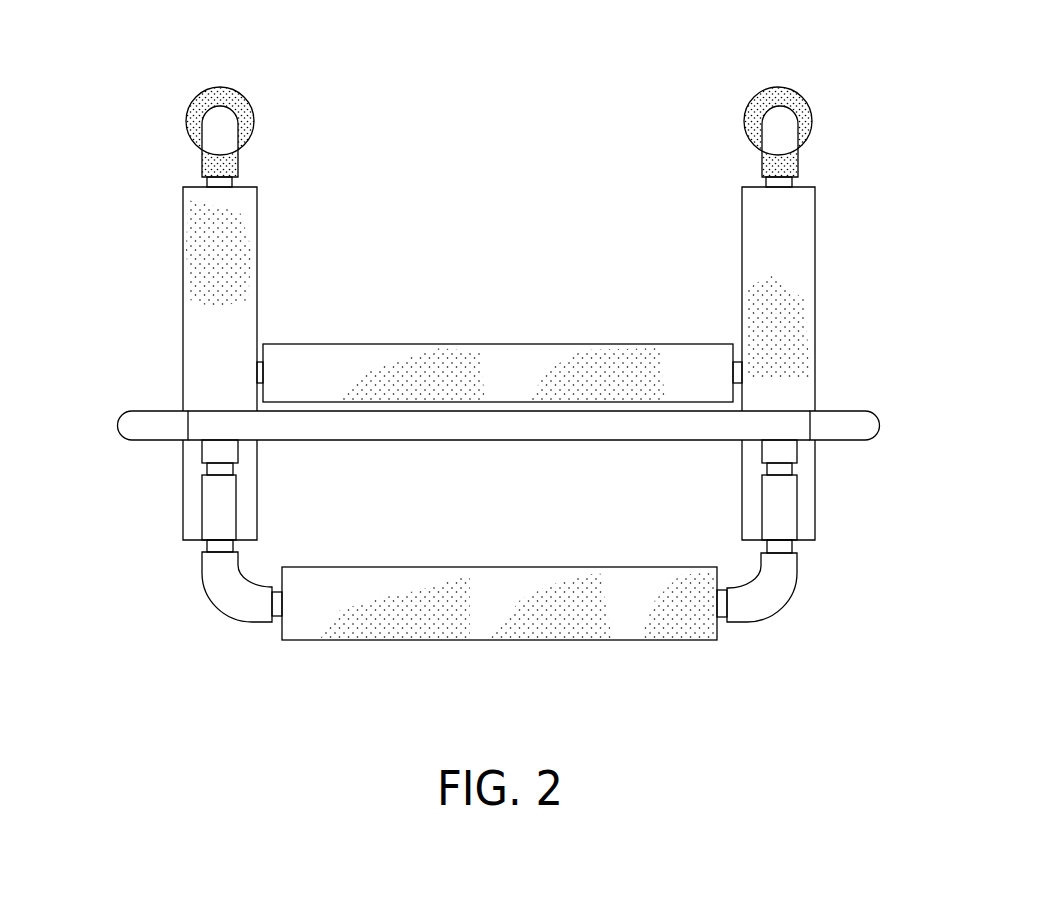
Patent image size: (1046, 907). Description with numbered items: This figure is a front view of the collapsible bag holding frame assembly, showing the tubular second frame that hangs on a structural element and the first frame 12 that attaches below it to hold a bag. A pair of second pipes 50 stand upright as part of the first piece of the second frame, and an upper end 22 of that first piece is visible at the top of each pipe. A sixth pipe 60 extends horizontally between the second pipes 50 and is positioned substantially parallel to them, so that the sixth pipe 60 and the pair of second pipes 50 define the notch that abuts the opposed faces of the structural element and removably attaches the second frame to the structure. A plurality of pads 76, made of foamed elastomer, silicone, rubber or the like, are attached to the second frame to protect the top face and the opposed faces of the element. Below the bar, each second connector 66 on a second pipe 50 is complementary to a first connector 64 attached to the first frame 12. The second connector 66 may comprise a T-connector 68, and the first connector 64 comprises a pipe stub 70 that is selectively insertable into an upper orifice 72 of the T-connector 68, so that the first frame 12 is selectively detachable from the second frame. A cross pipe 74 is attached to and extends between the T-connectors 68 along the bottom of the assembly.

The first frame 12 is at (407, 427).
The upper end 22 is at (780, 107).
The second pipes 50 is at (222, 270).
The sixth pipe 60 is at (550, 377).
The first connectors 64 is at (213, 471).
The second connectors 66 is at (220, 513).
The T-connector 68 is at (797, 523).
The pipe stub 70 is at (783, 470).
The upper orifice 72 is at (782, 478).
The cross pipe 74 is at (550, 605).
The pads 76 is at (437, 587).